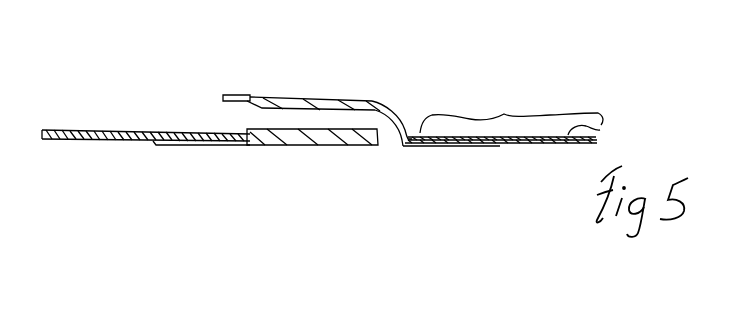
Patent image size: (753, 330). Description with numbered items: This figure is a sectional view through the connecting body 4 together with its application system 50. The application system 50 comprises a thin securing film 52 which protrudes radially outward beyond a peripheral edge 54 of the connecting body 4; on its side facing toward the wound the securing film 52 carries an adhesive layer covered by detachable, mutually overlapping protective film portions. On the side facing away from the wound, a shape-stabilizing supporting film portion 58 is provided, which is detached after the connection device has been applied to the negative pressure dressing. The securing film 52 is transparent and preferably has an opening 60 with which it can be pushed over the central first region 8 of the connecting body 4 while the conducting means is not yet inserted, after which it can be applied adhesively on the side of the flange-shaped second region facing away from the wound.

The connecting body 4 is at (406, 99).
The central first region 8 is at (338, 99).
The application system 50 is at (504, 113).
The securing film 52 is at (510, 144).
The peripheral edge 54 is at (497, 146).
The supporting film portion 58 is at (61, 131).
The opening 60 is at (230, 143).